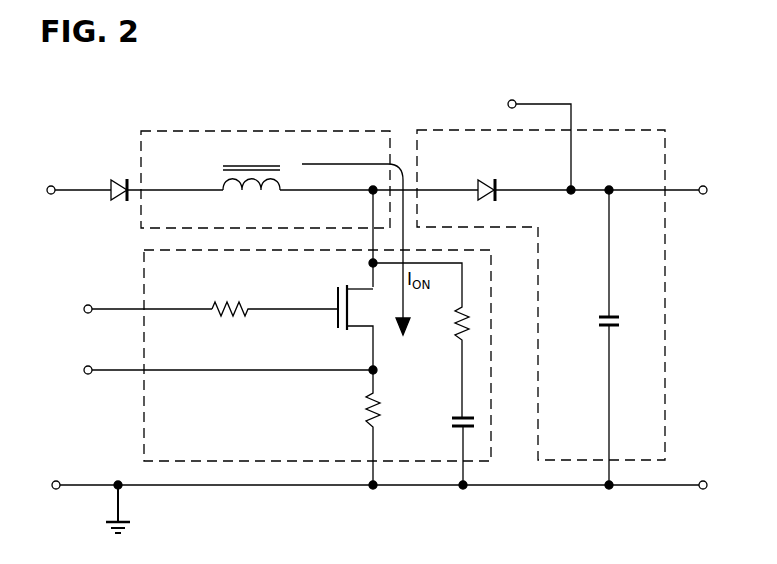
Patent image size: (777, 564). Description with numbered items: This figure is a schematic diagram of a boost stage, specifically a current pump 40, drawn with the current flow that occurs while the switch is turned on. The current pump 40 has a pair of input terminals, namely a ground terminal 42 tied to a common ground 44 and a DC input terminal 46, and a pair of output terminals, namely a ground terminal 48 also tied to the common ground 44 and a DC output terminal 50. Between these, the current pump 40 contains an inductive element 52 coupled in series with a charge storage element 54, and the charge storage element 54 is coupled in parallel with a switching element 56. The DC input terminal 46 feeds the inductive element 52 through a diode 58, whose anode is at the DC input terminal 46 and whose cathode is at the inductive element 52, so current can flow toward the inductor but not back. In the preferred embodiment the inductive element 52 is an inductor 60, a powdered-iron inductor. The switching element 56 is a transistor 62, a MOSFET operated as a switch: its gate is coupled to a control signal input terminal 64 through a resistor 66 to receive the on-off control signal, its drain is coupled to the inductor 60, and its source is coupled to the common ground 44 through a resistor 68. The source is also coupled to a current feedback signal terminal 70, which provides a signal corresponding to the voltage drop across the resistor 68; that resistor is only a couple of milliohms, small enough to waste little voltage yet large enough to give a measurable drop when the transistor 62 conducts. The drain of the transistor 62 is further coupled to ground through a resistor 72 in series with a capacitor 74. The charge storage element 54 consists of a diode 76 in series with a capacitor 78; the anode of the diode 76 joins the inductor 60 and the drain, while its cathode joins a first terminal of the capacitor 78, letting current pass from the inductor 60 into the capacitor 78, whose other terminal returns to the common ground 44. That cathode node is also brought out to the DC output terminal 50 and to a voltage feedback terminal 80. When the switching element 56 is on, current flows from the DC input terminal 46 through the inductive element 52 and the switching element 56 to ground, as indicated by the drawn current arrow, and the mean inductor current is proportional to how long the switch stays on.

The current pump 40 is at (658, 92).
The ground terminal 42 is at (90, 488).
The common ground 44 is at (136, 520).
The DC input terminal 46 is at (88, 188).
The ground terminal 48 is at (685, 485).
The DC output terminal 50 is at (688, 186).
The inductive element 52 is at (320, 131).
The charge storage element 54 is at (668, 232).
The switching element 56 is at (144, 418).
The diode 58 is at (118, 180).
The inductor 60 is at (247, 164).
The transistor 62 is at (338, 318).
The control signal input terminal 64 is at (108, 306).
The resistor 66 is at (250, 304).
The resistor 68 is at (370, 412).
The current feedback signal terminal 70 is at (118, 368).
The resistor 72 is at (462, 330).
The capacitor 74 is at (454, 422).
The diode 76 is at (487, 180).
The capacitor 78 is at (622, 322).
The voltage feedback terminal 80 is at (571, 118).